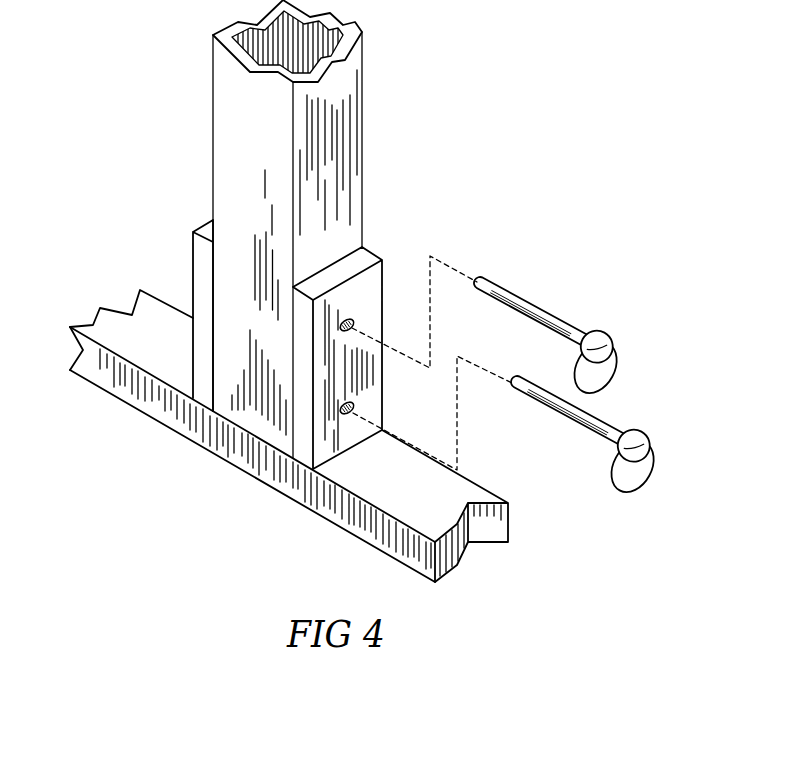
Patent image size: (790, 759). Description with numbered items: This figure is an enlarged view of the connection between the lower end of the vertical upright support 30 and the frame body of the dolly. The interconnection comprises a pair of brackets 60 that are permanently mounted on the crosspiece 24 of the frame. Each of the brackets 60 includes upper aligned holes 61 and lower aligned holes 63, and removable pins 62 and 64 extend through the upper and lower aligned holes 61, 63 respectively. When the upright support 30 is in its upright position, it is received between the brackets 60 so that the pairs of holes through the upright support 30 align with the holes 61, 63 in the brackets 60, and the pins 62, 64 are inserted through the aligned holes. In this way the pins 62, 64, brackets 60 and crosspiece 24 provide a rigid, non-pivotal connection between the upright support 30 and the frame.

The crosspiece 24 is at (433, 504).
The upright support 30 is at (362, 180).
The brackets 60 is at (193, 272).
The upper aligned holes 61 is at (352, 316).
The removable pin 62 is at (532, 297).
The lower aligned holes 63 is at (355, 410).
The removable pin 64 is at (610, 430).